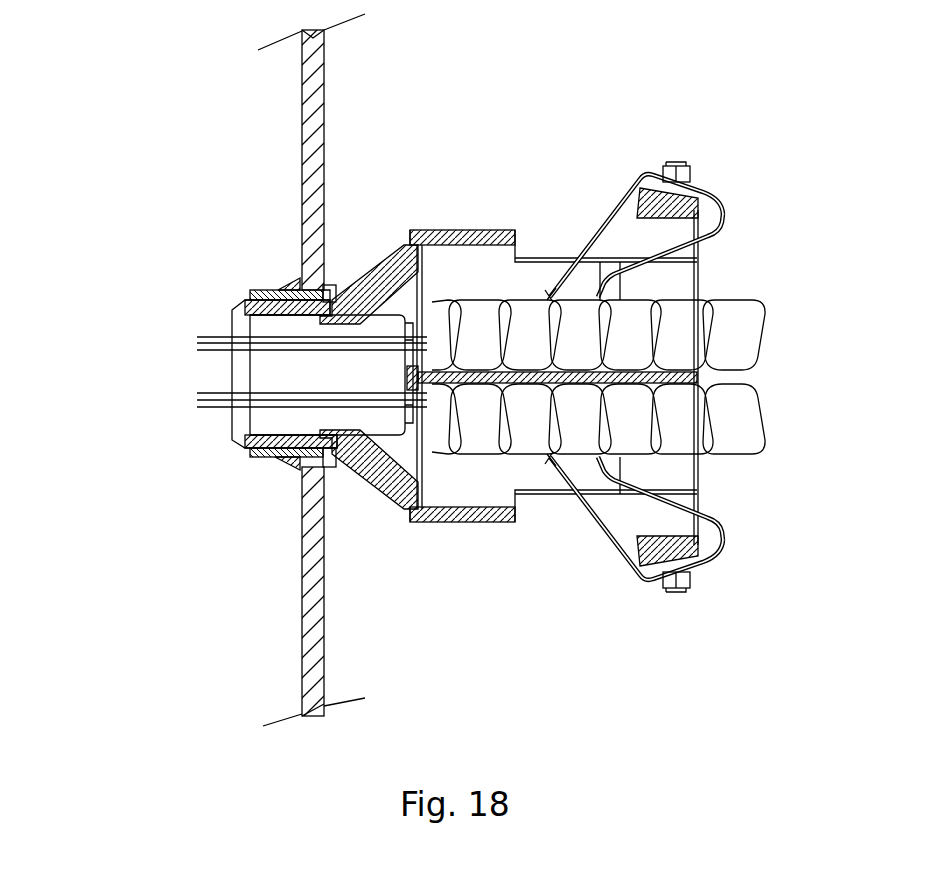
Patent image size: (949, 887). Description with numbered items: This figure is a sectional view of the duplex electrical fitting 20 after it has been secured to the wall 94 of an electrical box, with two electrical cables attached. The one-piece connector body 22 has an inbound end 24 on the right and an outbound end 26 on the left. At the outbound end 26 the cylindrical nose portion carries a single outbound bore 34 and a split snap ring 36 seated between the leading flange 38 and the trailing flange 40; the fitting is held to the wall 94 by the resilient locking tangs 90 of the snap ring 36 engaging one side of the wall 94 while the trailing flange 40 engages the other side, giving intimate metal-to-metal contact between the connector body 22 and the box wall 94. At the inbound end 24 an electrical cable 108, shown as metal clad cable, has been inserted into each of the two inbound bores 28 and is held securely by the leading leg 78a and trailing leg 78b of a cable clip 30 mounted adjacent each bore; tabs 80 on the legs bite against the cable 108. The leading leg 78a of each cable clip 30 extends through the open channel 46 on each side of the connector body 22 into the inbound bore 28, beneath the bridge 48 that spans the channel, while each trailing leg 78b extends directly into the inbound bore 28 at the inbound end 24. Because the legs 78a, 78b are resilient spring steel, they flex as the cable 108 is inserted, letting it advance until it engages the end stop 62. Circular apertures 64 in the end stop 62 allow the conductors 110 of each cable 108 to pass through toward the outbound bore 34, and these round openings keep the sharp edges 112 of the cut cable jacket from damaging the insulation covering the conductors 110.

The duplex electrical fitting 20 is at (200, 258).
The connector body 22 is at (457, 522).
The inbound end 24 is at (698, 377).
The outbound end 26 is at (232, 377).
The inbound bore 28 is at (646, 293).
The cable clip 30 is at (690, 177).
The outbound bore 34 is at (275, 386).
The split snap ring 36 is at (285, 465).
The leading flange 38 is at (247, 455).
The trailing flange 40 is at (332, 288).
The open channel 46 is at (545, 250).
The bridge 48 is at (700, 212).
The end stop 62 is at (418, 380).
The circular aperture 64 is at (391, 294).
The leading leg 78a is at (603, 205).
The trailing leg 78b is at (706, 243).
The tab 80 is at (547, 292).
The resilient locking tang 90 is at (290, 488).
The wall 94 is at (320, 66).
The electrical cable 108 is at (753, 327).
The conductor 110 is at (217, 337).
The sharp edge 112 is at (414, 229).